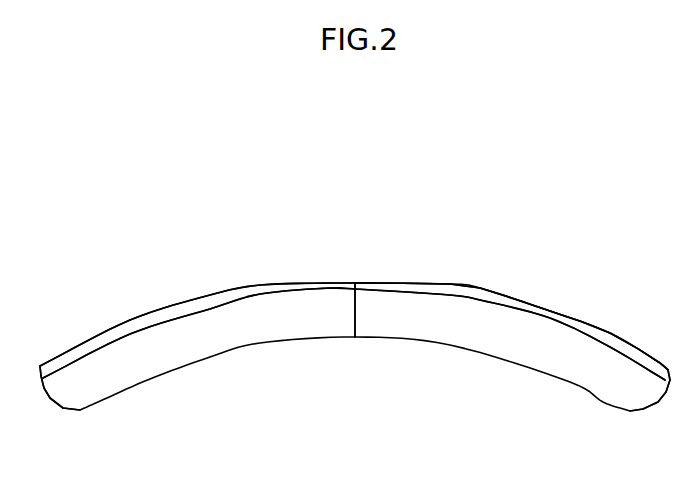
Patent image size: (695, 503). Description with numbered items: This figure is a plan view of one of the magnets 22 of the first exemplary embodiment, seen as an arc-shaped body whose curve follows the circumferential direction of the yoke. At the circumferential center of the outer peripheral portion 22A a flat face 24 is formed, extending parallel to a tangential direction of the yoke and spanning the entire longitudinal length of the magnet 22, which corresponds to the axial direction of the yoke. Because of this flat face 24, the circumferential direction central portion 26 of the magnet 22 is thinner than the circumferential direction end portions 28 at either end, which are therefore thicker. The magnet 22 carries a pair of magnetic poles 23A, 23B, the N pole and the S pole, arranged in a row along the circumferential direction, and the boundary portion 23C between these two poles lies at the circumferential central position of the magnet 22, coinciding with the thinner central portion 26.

The magnet 22 is at (367, 203).
The outer peripheral portion 22A is at (523, 298).
The magnetic pole 23A is at (190, 323).
The magnetic pole 23B is at (533, 327).
The boundary portion 23C is at (357, 311).
The flat face 24 is at (337, 282).
The central portion 26 is at (343, 326).
The end portions 28 is at (102, 385).